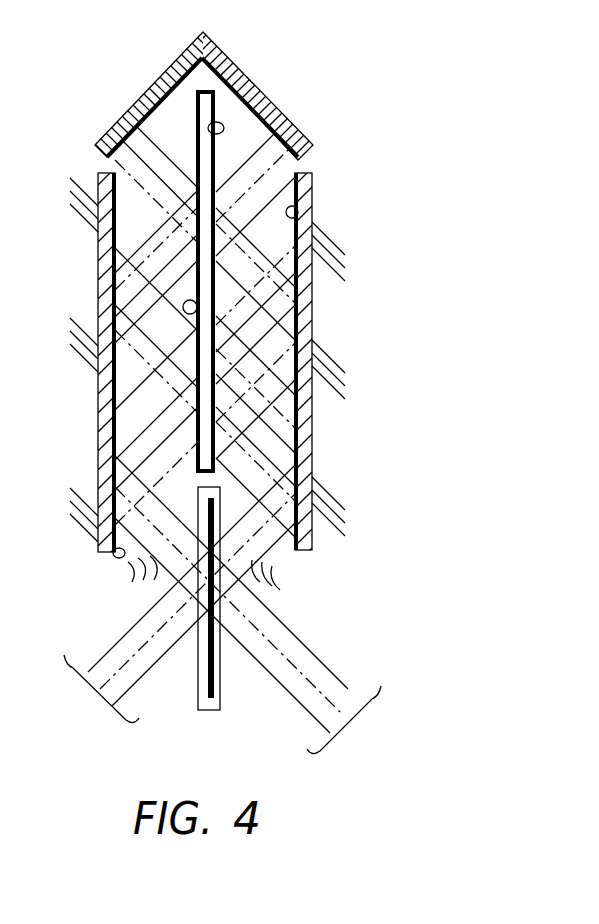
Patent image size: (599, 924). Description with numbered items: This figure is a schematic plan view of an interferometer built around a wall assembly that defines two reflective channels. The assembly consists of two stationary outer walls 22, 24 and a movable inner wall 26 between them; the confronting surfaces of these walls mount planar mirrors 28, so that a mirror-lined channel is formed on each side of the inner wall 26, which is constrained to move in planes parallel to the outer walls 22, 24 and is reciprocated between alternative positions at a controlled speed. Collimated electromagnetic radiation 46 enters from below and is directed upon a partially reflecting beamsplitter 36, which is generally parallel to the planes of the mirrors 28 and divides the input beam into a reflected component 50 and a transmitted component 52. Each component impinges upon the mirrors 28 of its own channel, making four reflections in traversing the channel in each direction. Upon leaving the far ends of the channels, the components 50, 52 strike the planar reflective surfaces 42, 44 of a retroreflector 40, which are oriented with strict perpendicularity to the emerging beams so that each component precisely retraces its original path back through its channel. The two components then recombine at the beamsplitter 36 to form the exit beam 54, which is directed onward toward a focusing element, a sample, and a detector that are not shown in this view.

The stationary outer wall 22 is at (98, 464).
The stationary outer wall 24 is at (311, 438).
The movable inner wall 26 is at (203, 248).
The planar mirrors 28 is at (206, 130).
The beamsplitter 36 is at (210, 712).
The retroreflector 40 is at (255, 82).
The planar reflective surface 42 is at (248, 106).
The planar reflective surface 44 is at (177, 92).
The collimated electromagnetic radiation 46 is at (364, 715).
The reflected component 50 is at (269, 592).
The transmitted component 52 is at (158, 574).
The exit beam 54 is at (88, 700).